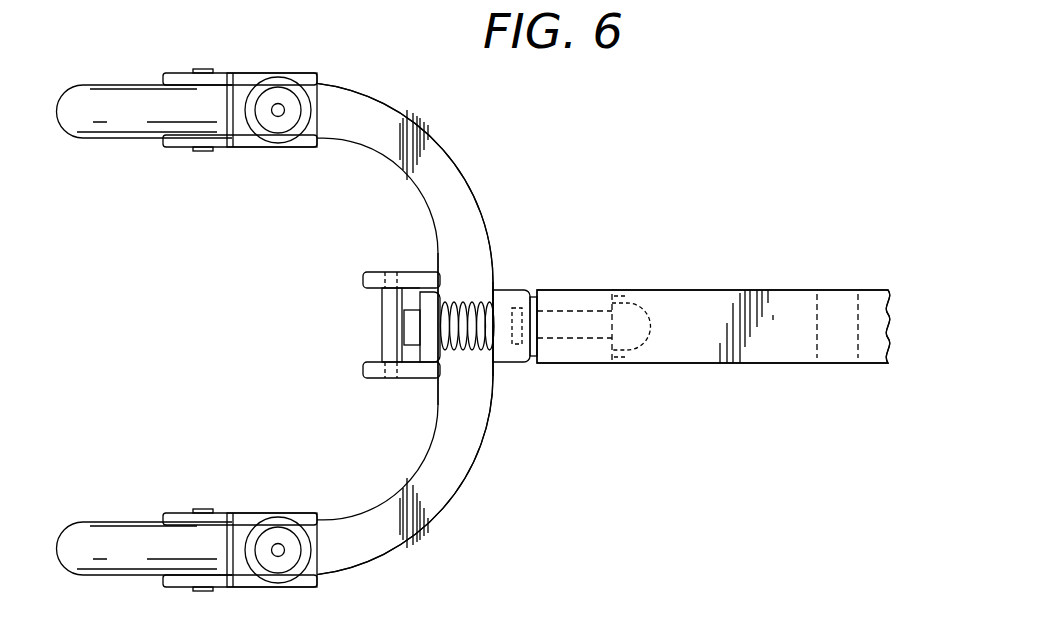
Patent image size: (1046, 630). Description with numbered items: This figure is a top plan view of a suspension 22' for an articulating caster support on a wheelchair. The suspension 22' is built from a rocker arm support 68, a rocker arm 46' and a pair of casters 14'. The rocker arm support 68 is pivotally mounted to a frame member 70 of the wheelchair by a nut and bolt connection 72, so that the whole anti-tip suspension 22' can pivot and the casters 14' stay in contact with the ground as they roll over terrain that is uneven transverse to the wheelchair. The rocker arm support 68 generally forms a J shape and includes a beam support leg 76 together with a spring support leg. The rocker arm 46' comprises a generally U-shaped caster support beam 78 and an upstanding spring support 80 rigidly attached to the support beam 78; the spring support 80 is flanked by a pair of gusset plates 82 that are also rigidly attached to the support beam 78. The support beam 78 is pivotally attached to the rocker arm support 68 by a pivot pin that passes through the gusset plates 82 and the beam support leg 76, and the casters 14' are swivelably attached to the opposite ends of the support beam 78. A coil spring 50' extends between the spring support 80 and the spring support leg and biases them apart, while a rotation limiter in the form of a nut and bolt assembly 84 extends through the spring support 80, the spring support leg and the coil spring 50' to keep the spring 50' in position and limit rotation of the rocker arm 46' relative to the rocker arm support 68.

The casters 14' is at (145, 330).
The suspension 22' is at (603, 328).
The rocker arm 46' is at (404, 328).
The coil spring 50' is at (496, 310).
The rocker arm support 68 is at (527, 294).
The frame member 70 is at (624, 364).
The nut and bolt connection 72 is at (630, 306).
The beam support leg 76 is at (382, 300).
The caster support beam 78 is at (350, 140).
The spring support 80 is at (426, 290).
The gusset plates 82 is at (363, 284).
The nut and bolt assembly 84 is at (408, 327).